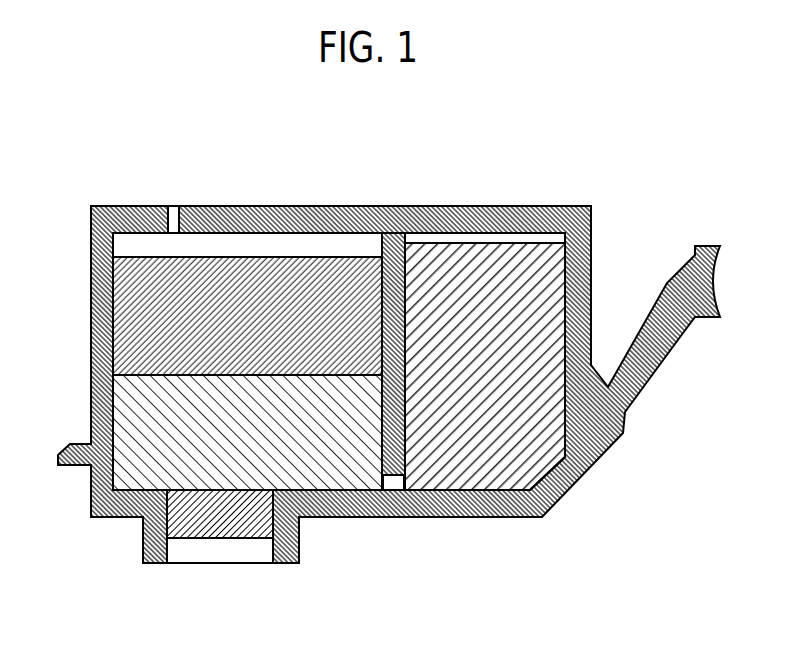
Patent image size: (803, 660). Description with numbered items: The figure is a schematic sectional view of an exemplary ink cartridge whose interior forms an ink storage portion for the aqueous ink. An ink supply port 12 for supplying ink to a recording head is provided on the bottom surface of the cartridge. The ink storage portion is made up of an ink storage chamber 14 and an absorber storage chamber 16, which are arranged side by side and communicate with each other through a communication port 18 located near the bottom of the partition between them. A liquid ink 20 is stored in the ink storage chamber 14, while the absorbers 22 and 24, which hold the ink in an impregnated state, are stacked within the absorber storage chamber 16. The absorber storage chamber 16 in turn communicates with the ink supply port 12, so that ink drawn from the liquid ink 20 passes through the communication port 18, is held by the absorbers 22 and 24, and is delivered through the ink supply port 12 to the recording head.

The ink supply port 12 is at (225, 552).
The ink storage chamber 14 is at (530, 240).
The absorber storage chamber 16 is at (232, 247).
The communication port 18 is at (393, 483).
The liquid ink 20 is at (510, 458).
The absorber 22 is at (133, 411).
The absorber 24 is at (163, 315).